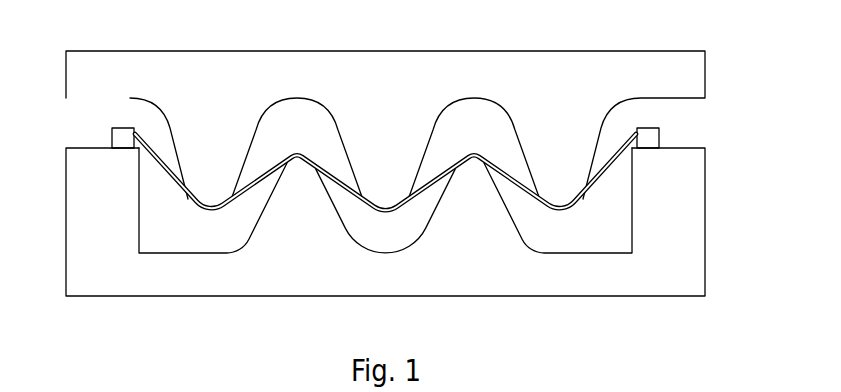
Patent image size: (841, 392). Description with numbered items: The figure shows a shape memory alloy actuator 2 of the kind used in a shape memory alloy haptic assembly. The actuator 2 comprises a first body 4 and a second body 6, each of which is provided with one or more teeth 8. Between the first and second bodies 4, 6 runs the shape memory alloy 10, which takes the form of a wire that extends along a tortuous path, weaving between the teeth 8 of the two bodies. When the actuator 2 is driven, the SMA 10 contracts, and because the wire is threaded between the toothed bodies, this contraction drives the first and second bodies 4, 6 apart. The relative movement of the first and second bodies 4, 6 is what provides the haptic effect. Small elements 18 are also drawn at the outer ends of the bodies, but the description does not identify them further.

The actuator 2 is at (381, 185).
The first body 4 is at (407, 247).
The second body 6 is at (675, 75).
The teeth 8 is at (293, 238).
The shape memory alloy 10 is at (158, 163).
The clamping element 18 is at (120, 145).